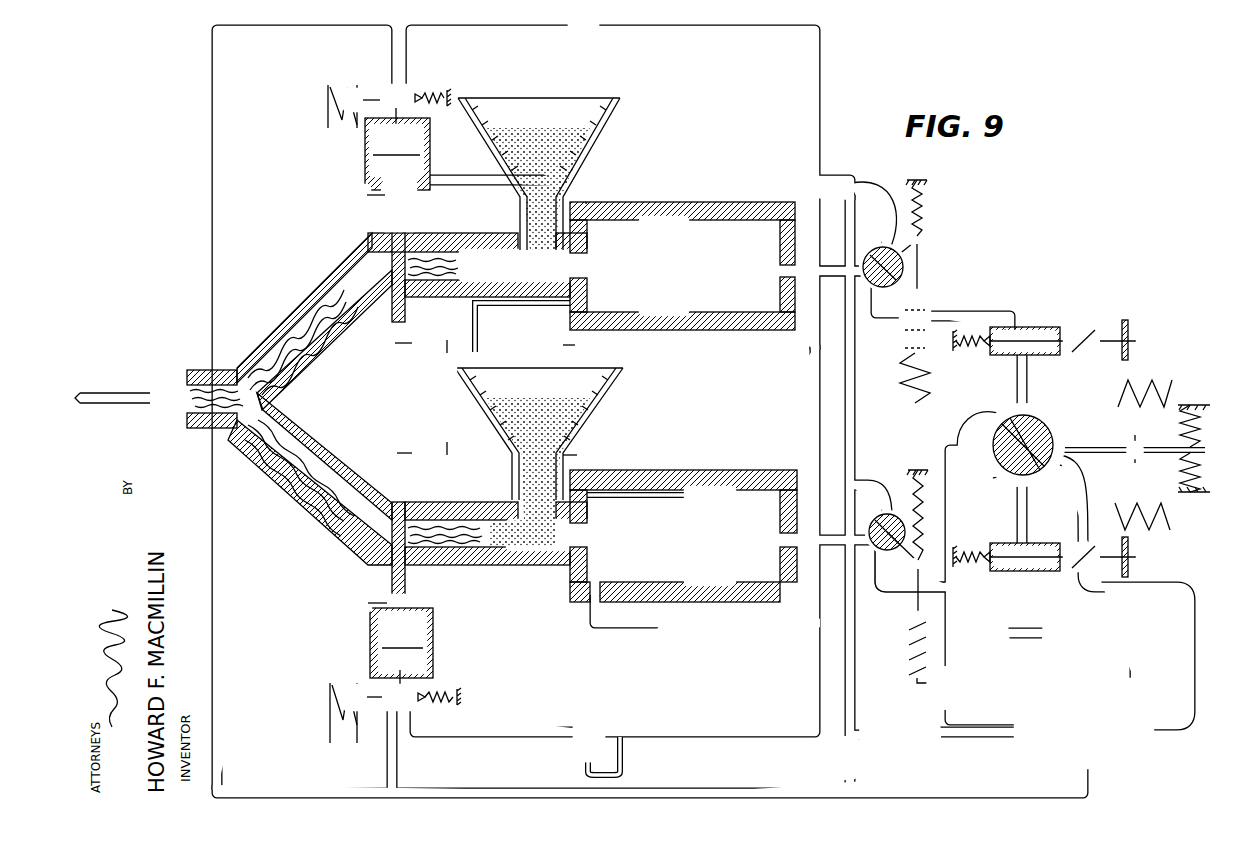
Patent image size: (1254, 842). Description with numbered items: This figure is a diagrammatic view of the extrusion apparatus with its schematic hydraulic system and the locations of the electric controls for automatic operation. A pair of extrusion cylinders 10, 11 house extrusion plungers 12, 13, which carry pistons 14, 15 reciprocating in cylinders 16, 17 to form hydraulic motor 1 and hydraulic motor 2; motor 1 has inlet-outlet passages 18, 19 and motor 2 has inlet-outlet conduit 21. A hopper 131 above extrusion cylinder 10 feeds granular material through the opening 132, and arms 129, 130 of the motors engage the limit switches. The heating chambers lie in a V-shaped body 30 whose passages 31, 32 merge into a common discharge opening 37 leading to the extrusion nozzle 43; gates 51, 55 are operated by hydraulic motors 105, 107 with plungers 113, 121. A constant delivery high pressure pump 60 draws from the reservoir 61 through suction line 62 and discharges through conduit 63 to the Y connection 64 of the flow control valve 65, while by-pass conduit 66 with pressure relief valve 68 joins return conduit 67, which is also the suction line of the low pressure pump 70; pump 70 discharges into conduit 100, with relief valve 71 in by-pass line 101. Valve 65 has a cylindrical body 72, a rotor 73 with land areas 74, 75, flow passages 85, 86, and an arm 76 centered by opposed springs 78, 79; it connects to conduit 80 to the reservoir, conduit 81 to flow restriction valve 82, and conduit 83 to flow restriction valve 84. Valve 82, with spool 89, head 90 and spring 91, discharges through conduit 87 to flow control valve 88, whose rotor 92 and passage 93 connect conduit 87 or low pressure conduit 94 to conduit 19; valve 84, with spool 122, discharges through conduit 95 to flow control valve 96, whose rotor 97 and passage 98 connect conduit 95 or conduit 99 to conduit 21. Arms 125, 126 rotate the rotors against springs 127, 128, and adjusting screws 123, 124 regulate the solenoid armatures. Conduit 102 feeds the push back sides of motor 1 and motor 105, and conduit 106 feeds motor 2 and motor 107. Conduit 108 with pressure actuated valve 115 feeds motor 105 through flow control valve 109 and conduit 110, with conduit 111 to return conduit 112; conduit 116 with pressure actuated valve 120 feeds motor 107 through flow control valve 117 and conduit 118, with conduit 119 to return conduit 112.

The hydraulic motor 1 is at (712, 541).
The hydraulic motor 2 is at (662, 278).
The extrusion cylinder 10 is at (470, 502).
The extrusion cylinder 11 is at (484, 233).
The extrusion plunger 12 is at (623, 526).
The extrusion plunger 13 is at (622, 260).
The piston 14 is at (712, 525).
The piston 15 is at (676, 253).
The cylinder 16 is at (730, 478).
The cylinder 17 is at (725, 330).
The fluid inlet and outlet passage 18 is at (600, 583).
The fluid inlet and outlet passage 19 is at (785, 539).
The fluid inlet and outlet passage 21 is at (778, 270).
The V-shaped body 30 is at (258, 325).
The passage 31 is at (306, 427).
The passage 32 is at (300, 366).
The common discharge opening 37 is at (238, 423).
The extrusion nozzle 43 is at (170, 370).
The gate 51 is at (402, 501).
The gate 55 is at (406, 315).
The constant delivery high pressure pump 60 is at (1114, 620).
The reservoir 61 is at (1088, 730).
The suction line 62 is at (1138, 648).
The discharge conduit 63 is at (994, 636).
The Y connection 64 is at (958, 440).
The flow control valve 65 is at (1046, 411).
The by-pass conduit 66 is at (953, 671).
The return conduit 67 is at (973, 737).
The pressure relief valve 68 is at (966, 690).
The fluid pump 70 is at (902, 762).
The by-pass control 71 is at (829, 758).
The cylindrical body 72 is at (1043, 405).
The rotor 73 is at (1045, 413).
The land area 74 is at (1044, 480).
The land area 75 is at (977, 428).
The arm 76 is at (1113, 445).
The spring 78 is at (1200, 470).
The spring 79 is at (1200, 433).
The conduit 80 is at (1087, 490).
The conduit 81 is at (1024, 520).
The flow restriction valve 82 is at (1000, 543).
The conduit 83 is at (1020, 394).
The flow restriction valve 84 is at (1050, 327).
The flow passage 85 is at (1012, 488).
The flow passage 86 is at (1052, 435).
The discharge conduit 87 is at (898, 590).
The flow control valve 88 is at (913, 502).
The spool 89 is at (1033, 571).
The head 90 is at (987, 562).
The spring 91 is at (982, 555).
The rotor 92 is at (876, 561).
The passage 93 is at (874, 522).
The conduit 94 is at (873, 490).
The discharge conduit 95 is at (988, 311).
The flow control valve 96 is at (872, 326).
The rotor 97 is at (892, 246).
The passage 98 is at (863, 278).
The conduit 99 is at (880, 215).
The conduit 100 is at (846, 692).
The by-pass line 101 is at (835, 784).
The conduit 102 is at (691, 643).
The hydraulic motor 105 is at (433, 658).
The conduit 106 is at (768, 172).
The hydraulic motor 107 is at (430, 160).
The conduit 108 is at (821, 683).
The flow control valve 109 is at (422, 705).
The conduit 110 is at (377, 680).
The conduit 111 is at (398, 752).
The return conduit 112 is at (685, 788).
The plunger 113 is at (405, 622).
The pressure actuated valve 115 is at (599, 723).
The conduit 116 is at (814, 33).
The flow control valve 117 is at (412, 98).
The conduit 118 is at (400, 114).
The conduit 119 is at (335, 33).
The pressure actuated valve 120 is at (571, 46).
The plunger 121 is at (413, 210).
The spool 122 is at (1020, 328).
The adjusting screw 123 is at (1145, 556).
The adjusting screw 124 is at (1145, 336).
The arm 125 is at (903, 551).
The arm 126 is at (920, 258).
The spring 127 is at (930, 492).
The spring 128 is at (923, 211).
The arm 129 is at (662, 485).
The arm 130 is at (560, 306).
The hopper 131 is at (600, 396).
The opening 132 is at (550, 520).